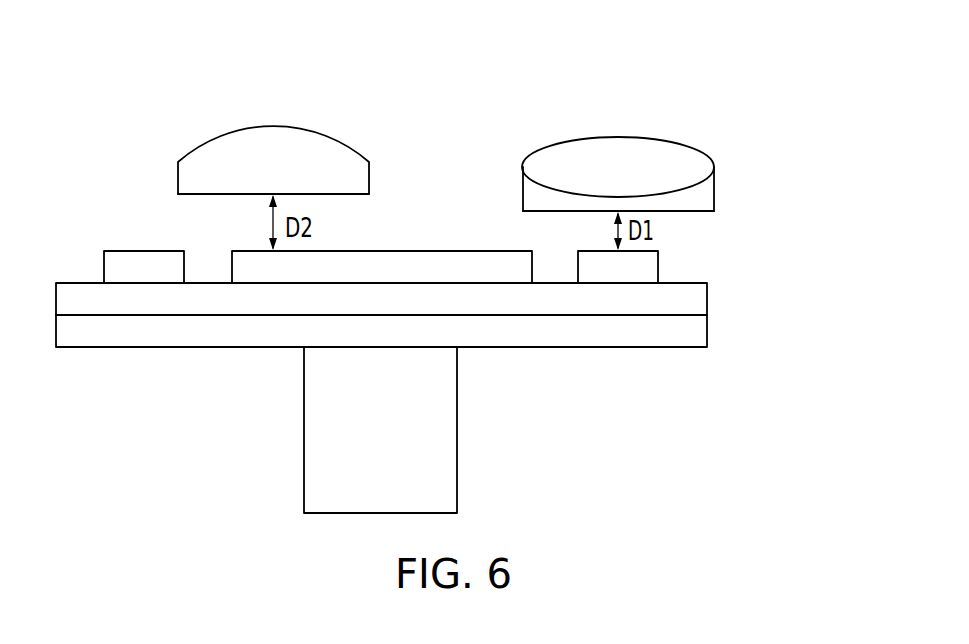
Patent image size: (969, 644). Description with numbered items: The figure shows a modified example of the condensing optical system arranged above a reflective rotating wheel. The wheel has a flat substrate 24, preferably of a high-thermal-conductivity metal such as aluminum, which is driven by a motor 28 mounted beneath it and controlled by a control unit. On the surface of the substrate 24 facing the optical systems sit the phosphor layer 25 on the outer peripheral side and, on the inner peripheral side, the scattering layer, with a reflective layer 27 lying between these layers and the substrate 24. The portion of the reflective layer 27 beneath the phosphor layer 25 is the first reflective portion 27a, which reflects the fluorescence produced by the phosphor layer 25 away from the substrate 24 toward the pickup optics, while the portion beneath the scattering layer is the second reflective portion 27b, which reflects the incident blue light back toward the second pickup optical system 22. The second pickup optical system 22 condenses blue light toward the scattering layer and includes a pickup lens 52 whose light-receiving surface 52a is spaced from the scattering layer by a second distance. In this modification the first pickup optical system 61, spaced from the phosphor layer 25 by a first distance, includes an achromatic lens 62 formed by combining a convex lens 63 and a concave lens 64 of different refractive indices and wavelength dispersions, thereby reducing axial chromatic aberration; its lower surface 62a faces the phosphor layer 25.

The second pickup optical system 22 is at (202, 120).
The pickup lens 52 is at (272, 143).
The light-receiving surface 52a is at (215, 195).
The first pickup optical system 61 is at (664, 108).
The achromatic lens 62 is at (812, 135).
The convex lens 63 is at (690, 160).
The concave lens 64 is at (703, 193).
The bottom surface of lens 62a is at (692, 212).
The phosphor layer 25 is at (643, 270).
The reflective layer 27 is at (690, 300).
The substrate 24 is at (690, 335).
The second reflective portion 27b is at (279, 299).
The first reflective portion 27a is at (622, 299).
The motor 28 is at (428, 430).